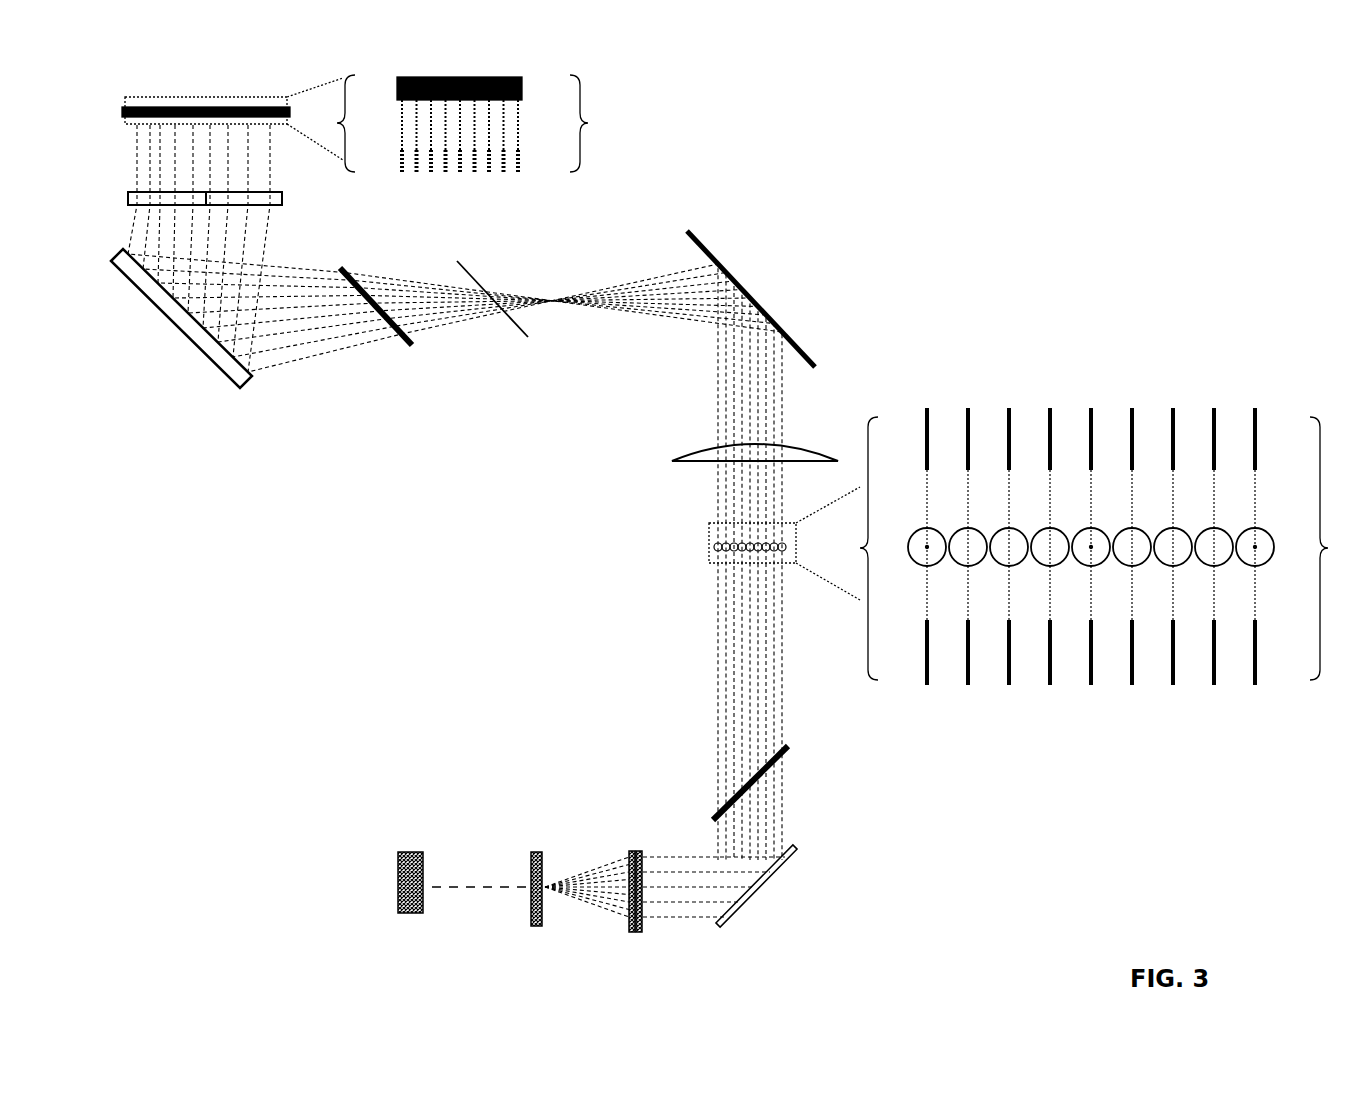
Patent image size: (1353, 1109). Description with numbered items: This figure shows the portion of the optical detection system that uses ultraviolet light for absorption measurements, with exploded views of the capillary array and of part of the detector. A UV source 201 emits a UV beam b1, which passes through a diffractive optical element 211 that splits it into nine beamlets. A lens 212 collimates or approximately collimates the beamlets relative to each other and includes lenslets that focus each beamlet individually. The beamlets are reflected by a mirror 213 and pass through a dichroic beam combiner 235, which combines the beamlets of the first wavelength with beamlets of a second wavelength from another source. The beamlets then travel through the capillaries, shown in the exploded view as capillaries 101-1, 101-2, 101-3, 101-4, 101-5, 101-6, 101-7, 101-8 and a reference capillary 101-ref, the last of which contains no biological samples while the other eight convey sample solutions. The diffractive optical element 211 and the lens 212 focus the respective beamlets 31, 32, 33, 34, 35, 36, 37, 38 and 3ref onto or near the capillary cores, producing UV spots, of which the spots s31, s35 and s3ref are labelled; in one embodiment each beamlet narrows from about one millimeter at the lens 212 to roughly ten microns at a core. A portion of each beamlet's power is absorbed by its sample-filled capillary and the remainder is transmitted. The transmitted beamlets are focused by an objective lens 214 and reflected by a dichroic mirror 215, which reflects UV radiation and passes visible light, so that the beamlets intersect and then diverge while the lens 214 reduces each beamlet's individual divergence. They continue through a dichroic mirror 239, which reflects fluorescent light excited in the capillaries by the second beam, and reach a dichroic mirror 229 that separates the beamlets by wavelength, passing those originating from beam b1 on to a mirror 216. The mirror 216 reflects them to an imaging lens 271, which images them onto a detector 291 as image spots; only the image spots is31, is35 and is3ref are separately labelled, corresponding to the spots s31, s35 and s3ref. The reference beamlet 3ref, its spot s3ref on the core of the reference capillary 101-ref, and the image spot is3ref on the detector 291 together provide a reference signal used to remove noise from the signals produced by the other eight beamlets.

The detector 291 is at (125, 106).
The imaging lens 271 is at (128, 198).
The mirror 216 is at (172, 330).
The dichroic mirror 229 is at (405, 346).
The dichroic mirror 239 is at (520, 350).
The dichroic mirror 215 is at (680, 224).
The objective lens 214 is at (688, 456).
The dichroic beam combiner 235 is at (790, 756).
The UV source 201 is at (400, 851).
The UV beam b1 is at (462, 889).
The diffractive optical element 211 is at (538, 852).
The lens 212 is at (637, 933).
The mirror 213 is at (798, 855).
The image spot is3ref is at (402, 103).
The image spot is31 is at (519, 103).
The image spot is35 is at (459, 104).
The capillary 101-1 is at (930, 528).
The capillary 101-2 is at (971, 528).
The capillary 101-3 is at (1012, 528).
The capillary 101-4 is at (1053, 528).
The capillary 101-5 is at (1094, 528).
The capillary 101-6 is at (1135, 528).
The capillary 101-7 is at (1176, 528).
The capillary 101-8 is at (1217, 528).
The reference capillary 101-ref is at (1258, 528).
The UV spot s31 is at (918, 553).
The UV spot s35 is at (1082, 562).
The UV spot s3ref is at (1265, 557).
The beamlet 31 is at (930, 688).
The beamlet 32 is at (971, 688).
The beamlet 33 is at (1013, 688).
The beamlet 34 is at (1061, 676).
The beamlet 35 is at (1104, 676).
The beamlet 36 is at (1141, 676).
The beamlet 37 is at (1181, 676).
The beamlet 38 is at (1220, 688).
The reference beamlet 3ref is at (1263, 686).